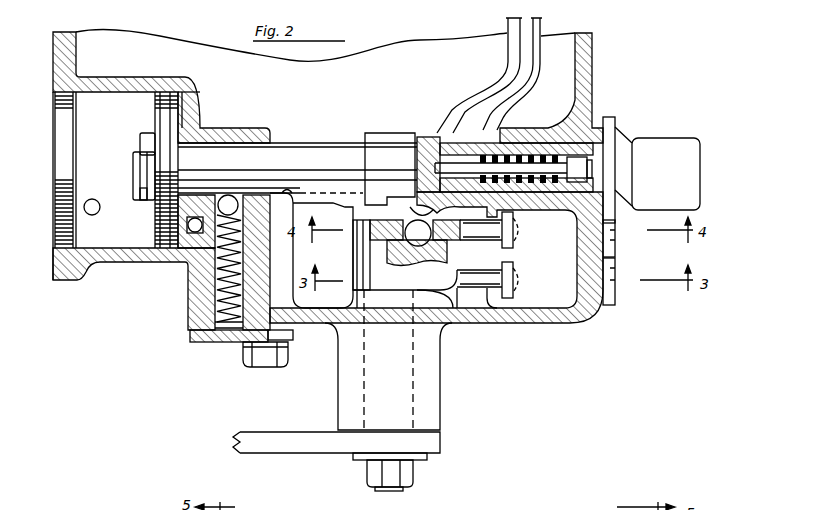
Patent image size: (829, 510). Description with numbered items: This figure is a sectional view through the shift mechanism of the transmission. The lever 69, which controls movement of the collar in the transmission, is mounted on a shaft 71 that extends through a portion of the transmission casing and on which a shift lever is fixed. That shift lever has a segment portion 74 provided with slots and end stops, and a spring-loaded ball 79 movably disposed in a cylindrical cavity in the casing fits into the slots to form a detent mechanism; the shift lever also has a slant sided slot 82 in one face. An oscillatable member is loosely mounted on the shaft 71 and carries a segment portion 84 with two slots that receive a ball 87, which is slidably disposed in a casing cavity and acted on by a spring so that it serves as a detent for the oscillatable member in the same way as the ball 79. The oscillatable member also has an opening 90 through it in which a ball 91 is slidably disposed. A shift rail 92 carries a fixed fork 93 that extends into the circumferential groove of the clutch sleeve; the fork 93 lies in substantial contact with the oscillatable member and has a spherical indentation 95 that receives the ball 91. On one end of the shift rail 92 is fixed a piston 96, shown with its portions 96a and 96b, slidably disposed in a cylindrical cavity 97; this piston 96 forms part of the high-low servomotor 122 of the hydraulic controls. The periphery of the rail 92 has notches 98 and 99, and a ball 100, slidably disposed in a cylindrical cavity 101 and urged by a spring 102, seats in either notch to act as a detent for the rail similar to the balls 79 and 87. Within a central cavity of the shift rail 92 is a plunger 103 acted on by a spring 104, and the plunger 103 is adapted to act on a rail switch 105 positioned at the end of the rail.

The cylindrical cavity 97 is at (118, 98).
The piston 96 is at (172, 108).
The sleeve inner portion 96a is at (153, 124).
The sleeve flange 96b is at (183, 118).
The ball 100 is at (216, 193).
The notch 98 is at (240, 192).
The notch 99 is at (289, 190).
The shift rail 92 is at (335, 143).
The fork 93 is at (478, 75).
The spring 104 is at (520, 160).
The plunger 103 is at (572, 127).
The rail switch 105 is at (663, 140).
The spherical indentation 95 is at (421, 219).
The opening 90 is at (392, 246).
The ball 91 is at (447, 250).
The slant sided slot 82 is at (410, 256).
The ball 87 is at (519, 230).
The segment portion 84 is at (487, 235).
The ball 79 is at (519, 280).
The segment portion 74 is at (486, 290).
The cylindrical cavity 101 is at (220, 287).
The spring 102 is at (222, 313).
The high-low servomotor 122 is at (101, 267).
The lever 69 is at (287, 442).
The shaft 71 is at (399, 491).